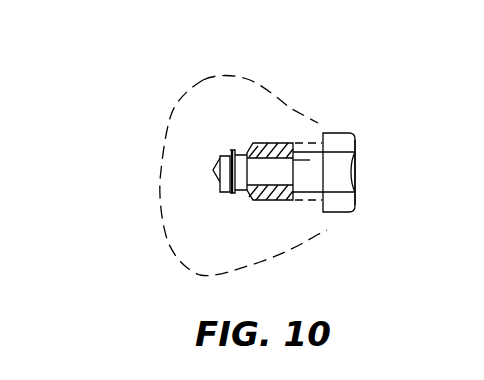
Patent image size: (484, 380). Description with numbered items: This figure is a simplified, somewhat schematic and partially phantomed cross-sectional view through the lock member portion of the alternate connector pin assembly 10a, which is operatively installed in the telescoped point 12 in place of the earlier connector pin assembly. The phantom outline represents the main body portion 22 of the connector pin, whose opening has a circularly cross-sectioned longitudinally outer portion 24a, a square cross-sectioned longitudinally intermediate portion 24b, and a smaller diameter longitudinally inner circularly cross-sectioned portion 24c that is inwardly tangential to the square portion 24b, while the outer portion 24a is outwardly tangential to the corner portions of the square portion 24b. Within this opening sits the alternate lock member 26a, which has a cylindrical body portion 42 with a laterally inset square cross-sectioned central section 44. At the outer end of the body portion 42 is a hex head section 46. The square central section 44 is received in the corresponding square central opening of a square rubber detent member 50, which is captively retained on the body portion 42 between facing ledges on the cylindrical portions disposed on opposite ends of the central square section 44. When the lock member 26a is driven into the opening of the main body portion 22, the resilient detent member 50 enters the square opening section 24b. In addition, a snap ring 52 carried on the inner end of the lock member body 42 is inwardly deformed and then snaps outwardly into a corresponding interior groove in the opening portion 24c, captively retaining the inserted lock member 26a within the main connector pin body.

The connector pin assembly 10a is at (197, 77).
The main body portion 22 is at (178, 135).
The snap ring 52 is at (218, 167).
The longitudinally inner circularly cross-sectioned portion 24c is at (232, 196).
The rubber detent member 50 is at (283, 143).
The square cross-sectioned longitudinally intermediate portion 24b is at (282, 141).
The cylindrical body portion 42 is at (302, 188).
The square cross-sectioned central section 44 is at (296, 179).
The hex head section 46 is at (345, 133).
The lock member 26a is at (359, 165).
The circularly cross-sectioned longitudinally outer portion 24a is at (322, 127).
The telescoped point 12 is at (275, 127).